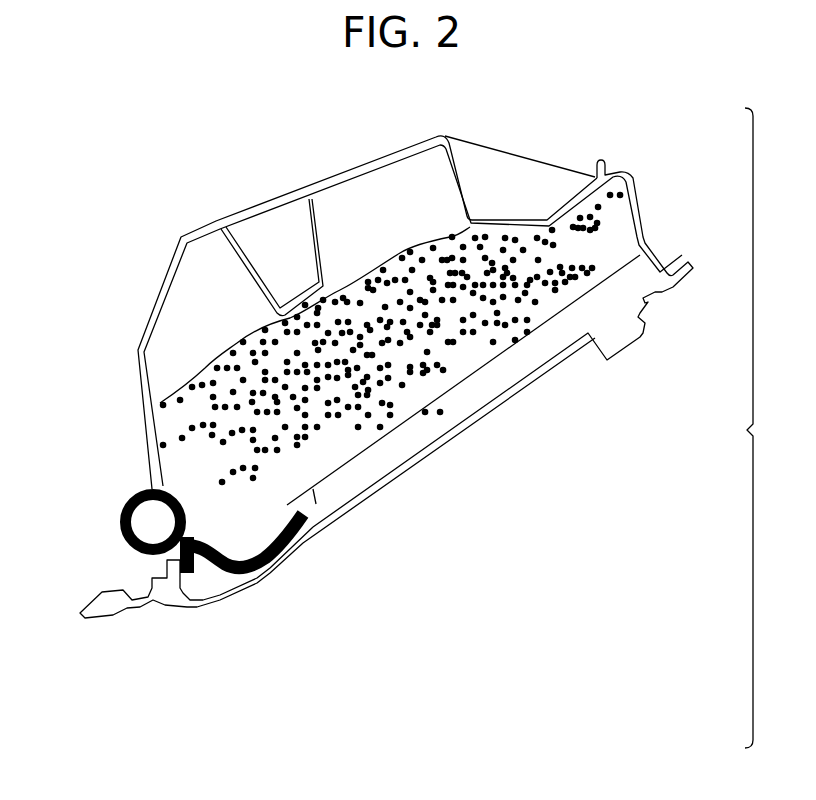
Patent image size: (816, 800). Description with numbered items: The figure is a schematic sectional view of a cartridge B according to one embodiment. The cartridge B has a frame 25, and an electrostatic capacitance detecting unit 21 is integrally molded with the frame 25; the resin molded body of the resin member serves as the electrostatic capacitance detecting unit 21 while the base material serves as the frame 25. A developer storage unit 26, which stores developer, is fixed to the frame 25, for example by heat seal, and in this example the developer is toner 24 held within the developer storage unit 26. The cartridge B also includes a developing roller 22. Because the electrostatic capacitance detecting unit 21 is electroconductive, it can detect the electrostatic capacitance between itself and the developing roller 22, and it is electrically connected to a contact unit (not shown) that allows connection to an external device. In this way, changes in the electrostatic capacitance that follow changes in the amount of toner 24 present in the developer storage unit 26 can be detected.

The electrostatic capacitance detecting unit 21 is at (265, 572).
The developing roller 22 is at (122, 536).
The toner 24 is at (195, 407).
The frame 25 is at (545, 348).
The developer storage unit 26 is at (197, 315).
The cartridge B is at (776, 445).